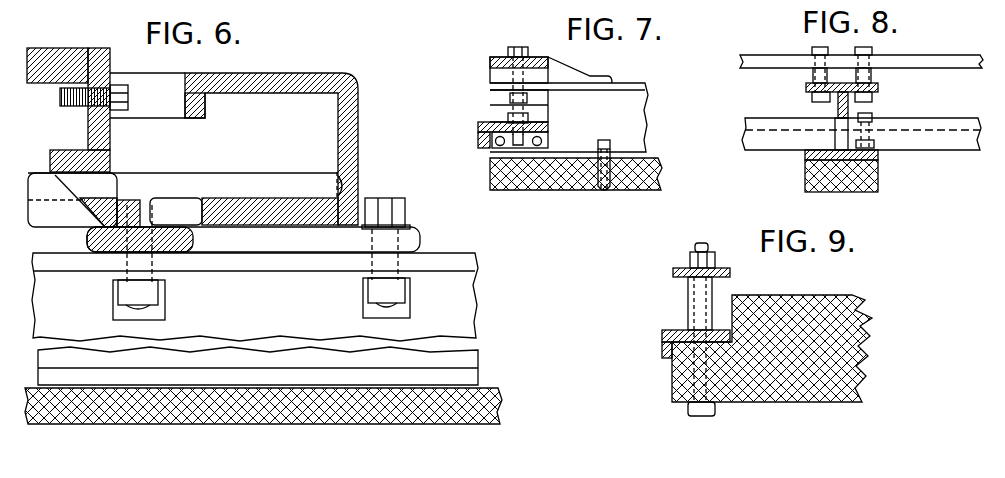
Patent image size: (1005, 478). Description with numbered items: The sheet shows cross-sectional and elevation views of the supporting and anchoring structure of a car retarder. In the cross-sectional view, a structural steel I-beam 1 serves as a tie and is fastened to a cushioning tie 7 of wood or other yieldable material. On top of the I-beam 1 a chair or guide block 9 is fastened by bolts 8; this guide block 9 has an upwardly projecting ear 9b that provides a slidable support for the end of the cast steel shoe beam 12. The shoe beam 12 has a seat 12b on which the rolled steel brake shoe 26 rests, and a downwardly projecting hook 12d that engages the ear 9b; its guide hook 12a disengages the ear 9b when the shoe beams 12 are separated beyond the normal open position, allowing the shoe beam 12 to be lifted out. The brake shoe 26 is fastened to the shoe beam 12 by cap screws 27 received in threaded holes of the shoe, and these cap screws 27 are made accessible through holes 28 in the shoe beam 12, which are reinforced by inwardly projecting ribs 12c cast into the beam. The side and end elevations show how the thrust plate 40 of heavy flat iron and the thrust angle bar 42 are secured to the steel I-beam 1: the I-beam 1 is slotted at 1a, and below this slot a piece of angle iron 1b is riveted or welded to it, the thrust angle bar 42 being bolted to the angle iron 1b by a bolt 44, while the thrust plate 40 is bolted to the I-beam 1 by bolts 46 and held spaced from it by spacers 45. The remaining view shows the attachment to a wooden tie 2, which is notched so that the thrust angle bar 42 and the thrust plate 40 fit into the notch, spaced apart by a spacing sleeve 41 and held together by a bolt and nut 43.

In FIG. 6, the structural steel I-beam 1 is at (470, 302).
In FIG. 7, the structural steel I-beam 1 is at (646, 118).
In FIG. 8, the structural steel I-beam 1 is at (835, 112).
In FIG. 7, the slot 1a is at (548, 113).
In FIG. 7, the angle iron piece 1b is at (548, 140).
In FIG. 9, the wooden tie 2 is at (850, 300).
In FIG. 6, the cushioning tie 7 is at (488, 388).
In FIG. 7, the cushioning tie 7 is at (490, 179).
In FIG. 8, the cushioning tie 7 is at (773, 151).
In FIG. 6, the bolt 8 is at (404, 208).
In FIG. 6, the guide block 9 is at (418, 242).
In FIG. 6, the upwardly projecting ear 9b is at (346, 181).
In FIG. 6, the shoe beam 12 is at (285, 68).
In FIG. 6, the guide hook 12a is at (345, 200).
In FIG. 6, the seat 12b is at (82, 197).
In FIG. 6, the inwardly projecting rib 12c is at (200, 120).
In FIG. 6, the downwardly projecting hook 12d is at (85, 210).
In FIG. 6, the brake shoe 26 is at (62, 52).
In FIG. 6, the cap screw 27 is at (122, 87).
In FIG. 6, the hole 28 is at (155, 113).
In FIG. 7, the thrust plate 40 is at (492, 58).
In FIG. 8, the thrust plate 40 is at (780, 56).
In FIG. 9, the thrust plate 40 is at (673, 272).
In FIG. 9, the spacing sleeve 41 is at (688, 300).
In FIG. 7, the thrust angle bar 42 is at (478, 141).
In FIG. 9, the thrust angle bar 42 is at (662, 348).
In FIG. 9, the bolt and nut 43 is at (688, 410).
In FIG. 7, the bolt 44 is at (508, 118).
In FIG. 7, the spacer 45 is at (490, 80).
In FIG. 7, the bolt 46 is at (518, 47).